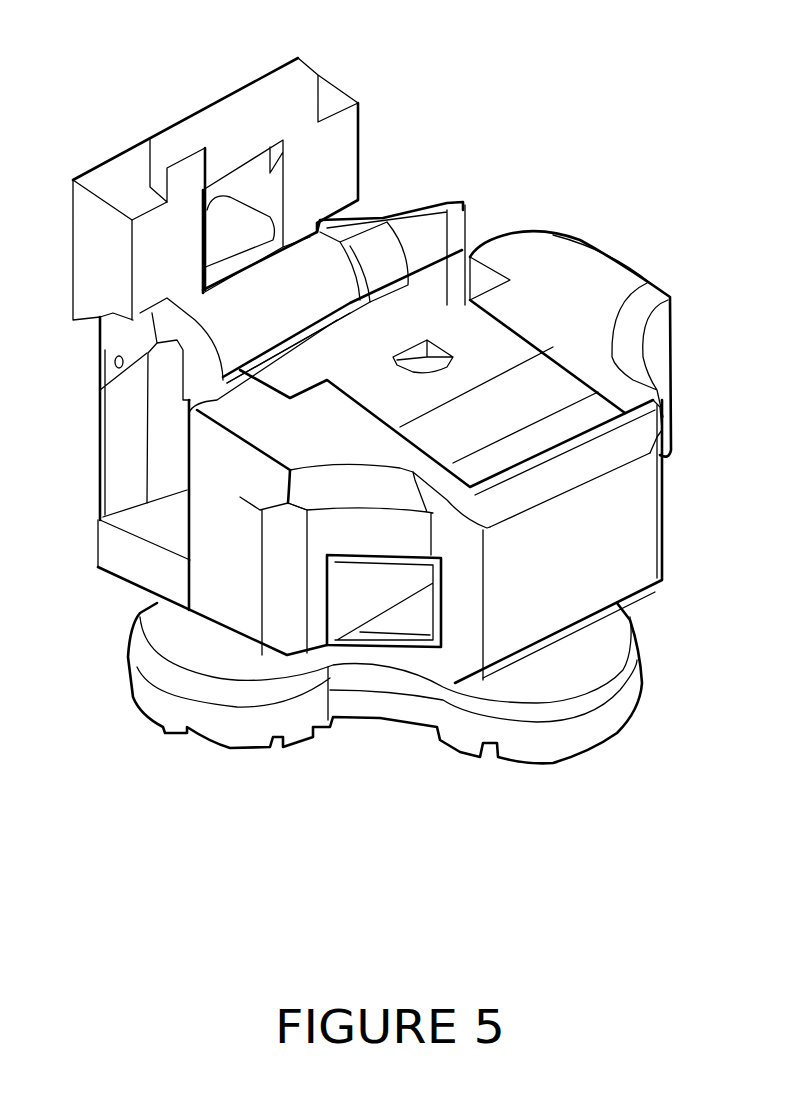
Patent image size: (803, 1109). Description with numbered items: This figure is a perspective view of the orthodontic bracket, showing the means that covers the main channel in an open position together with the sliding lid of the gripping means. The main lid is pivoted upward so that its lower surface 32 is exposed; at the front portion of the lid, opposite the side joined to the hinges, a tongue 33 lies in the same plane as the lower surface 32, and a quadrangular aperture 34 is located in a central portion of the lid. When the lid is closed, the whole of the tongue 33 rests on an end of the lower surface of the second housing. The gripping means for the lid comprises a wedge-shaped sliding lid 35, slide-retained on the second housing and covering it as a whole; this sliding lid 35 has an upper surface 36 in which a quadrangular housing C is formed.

The lower surface 32 is at (333, 162).
The tongue 33 is at (233, 143).
The quadrangular aperture 34 is at (216, 205).
The wedge-shaped sliding lid 35 is at (513, 330).
The upper surface 36 is at (520, 387).
The quadrangular housing C is at (475, 328).